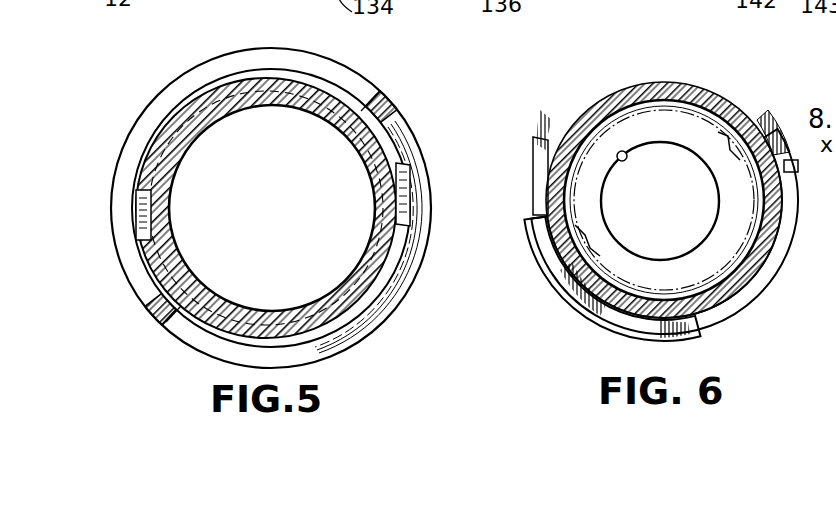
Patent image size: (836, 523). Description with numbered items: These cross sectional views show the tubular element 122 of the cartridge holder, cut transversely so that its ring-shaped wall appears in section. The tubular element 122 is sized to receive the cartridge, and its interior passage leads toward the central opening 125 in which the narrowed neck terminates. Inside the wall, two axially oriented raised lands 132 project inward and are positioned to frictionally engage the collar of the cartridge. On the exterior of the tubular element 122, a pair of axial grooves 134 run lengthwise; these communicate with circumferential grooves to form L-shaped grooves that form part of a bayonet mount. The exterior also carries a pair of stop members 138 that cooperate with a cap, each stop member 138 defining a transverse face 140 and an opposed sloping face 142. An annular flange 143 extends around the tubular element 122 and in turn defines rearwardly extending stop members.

In FIG. 5, the tubular element 122 is at (330, 325).
In FIG. 6, the tubular element 122 is at (718, 96).
In FIG. 6, the central opening 125 is at (625, 152).
In FIG. 6, the raised lands 132 is at (728, 150).
In FIG. 5, the axial grooves 134 is at (138, 200).
In FIG. 6, the axial grooves 134 is at (530, 222).
In FIG. 5, the stop members 138 is at (378, 100).
In FIG. 5, the transverse face 140 is at (365, 92).
In FIG. 5, the sloping face 142 is at (393, 116).
In FIG. 5, the annular flange 143 is at (398, 292).